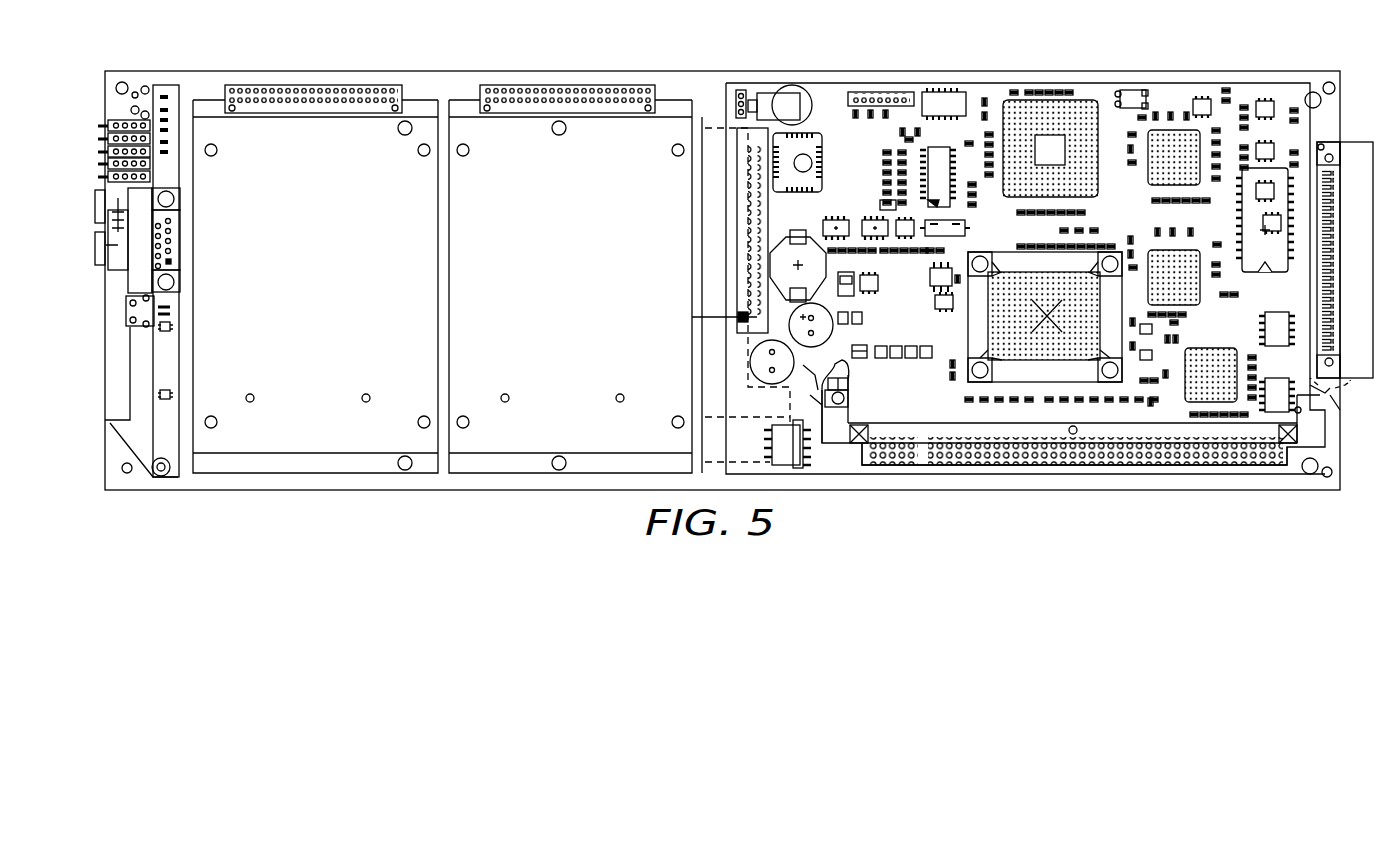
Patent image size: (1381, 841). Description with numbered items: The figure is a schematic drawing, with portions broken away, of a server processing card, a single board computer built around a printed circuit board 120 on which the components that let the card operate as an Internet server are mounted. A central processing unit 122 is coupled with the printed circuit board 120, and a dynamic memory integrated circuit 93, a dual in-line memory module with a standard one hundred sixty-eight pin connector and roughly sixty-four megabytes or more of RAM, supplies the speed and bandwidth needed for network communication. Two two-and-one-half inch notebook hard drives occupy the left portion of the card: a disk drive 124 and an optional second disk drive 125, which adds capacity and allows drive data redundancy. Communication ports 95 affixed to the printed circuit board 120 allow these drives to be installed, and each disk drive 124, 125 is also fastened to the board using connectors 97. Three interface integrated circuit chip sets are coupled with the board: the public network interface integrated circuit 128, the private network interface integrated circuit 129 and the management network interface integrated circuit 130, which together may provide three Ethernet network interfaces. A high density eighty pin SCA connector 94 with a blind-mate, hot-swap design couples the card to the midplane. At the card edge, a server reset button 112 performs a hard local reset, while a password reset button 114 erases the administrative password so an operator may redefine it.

The dynamic memory integrated circuit 93 is at (1023, 462).
The SCA connector 94 is at (1355, 150).
The communication ports 95 is at (303, 100).
The connectors 97 is at (218, 152).
The server reset button 112 is at (98, 247).
The password reset button 114 is at (97, 204).
The printed circuit board 120 is at (711, 84).
The central processing unit 122 is at (1016, 272).
The disk drive 124 is at (587, 371).
The second disk drive 125 is at (343, 371).
The public network interface integrated circuit 128 is at (1175, 132).
The private network interface integrated circuit 129 is at (1153, 252).
The management network interface integrated circuit 130 is at (1228, 350).